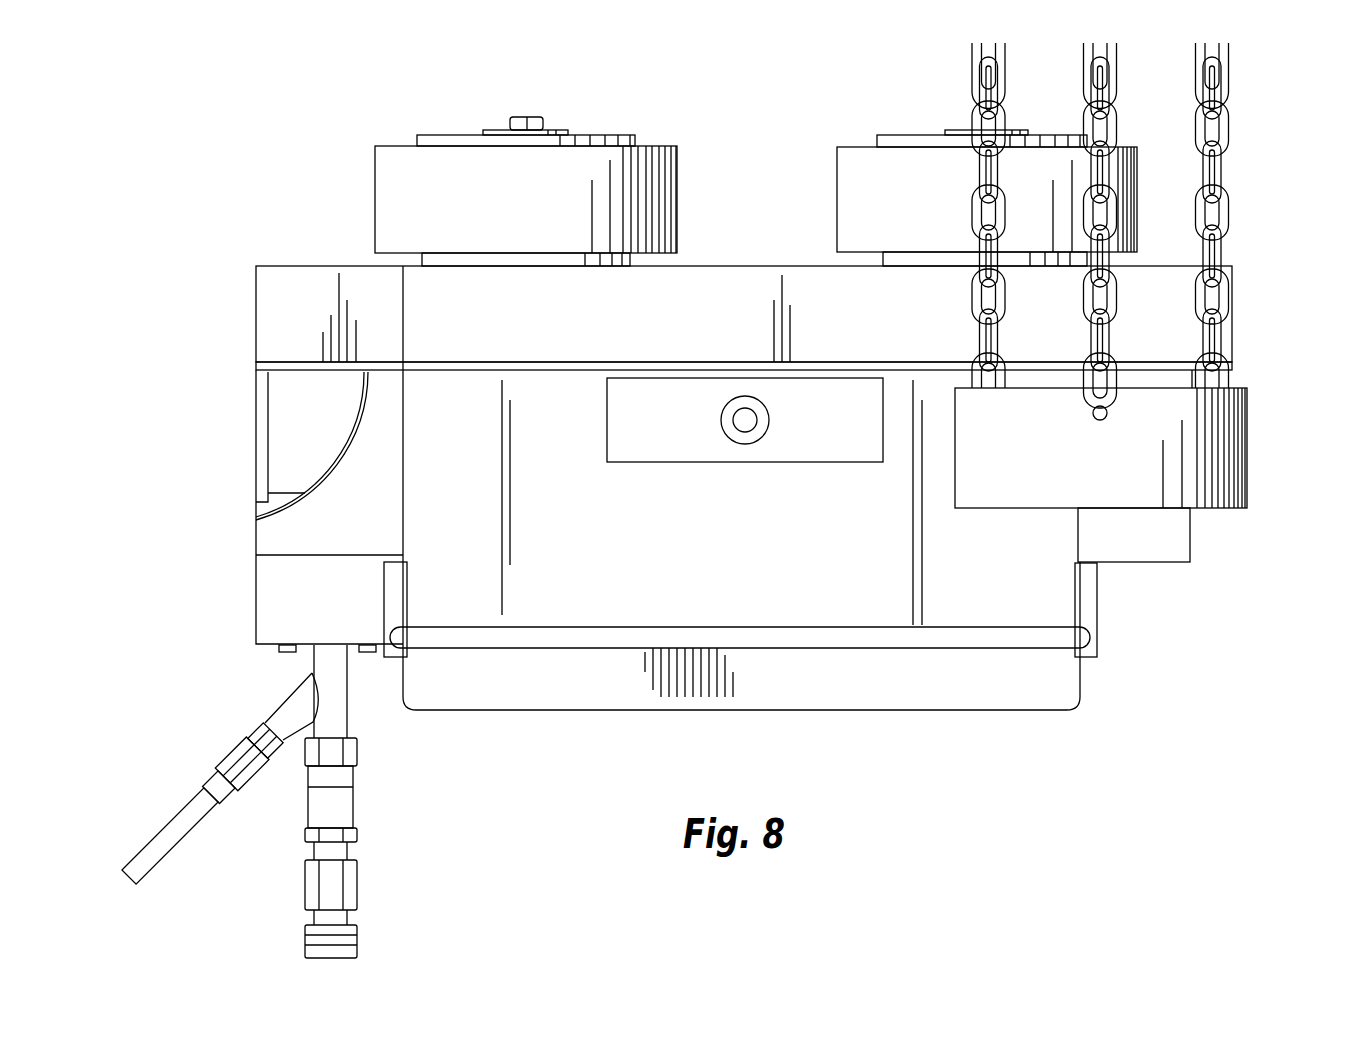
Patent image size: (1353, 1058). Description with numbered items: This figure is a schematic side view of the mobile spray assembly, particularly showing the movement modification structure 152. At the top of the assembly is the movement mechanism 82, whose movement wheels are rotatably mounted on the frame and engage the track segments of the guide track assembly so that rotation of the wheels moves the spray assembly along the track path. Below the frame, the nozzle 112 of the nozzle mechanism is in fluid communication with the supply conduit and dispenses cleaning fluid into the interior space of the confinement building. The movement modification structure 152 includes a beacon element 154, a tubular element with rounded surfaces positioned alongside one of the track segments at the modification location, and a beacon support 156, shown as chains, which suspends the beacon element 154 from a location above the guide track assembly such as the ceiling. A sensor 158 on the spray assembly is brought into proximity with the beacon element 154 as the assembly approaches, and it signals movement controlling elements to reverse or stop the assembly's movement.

The movement mechanism 82 is at (843, 138).
The nozzle 112 is at (155, 818).
The movement modification structure 152 is at (1149, 275).
The beacon element 154 is at (1213, 448).
The beacon support 156 is at (1222, 178).
The sensor 158 is at (741, 427).